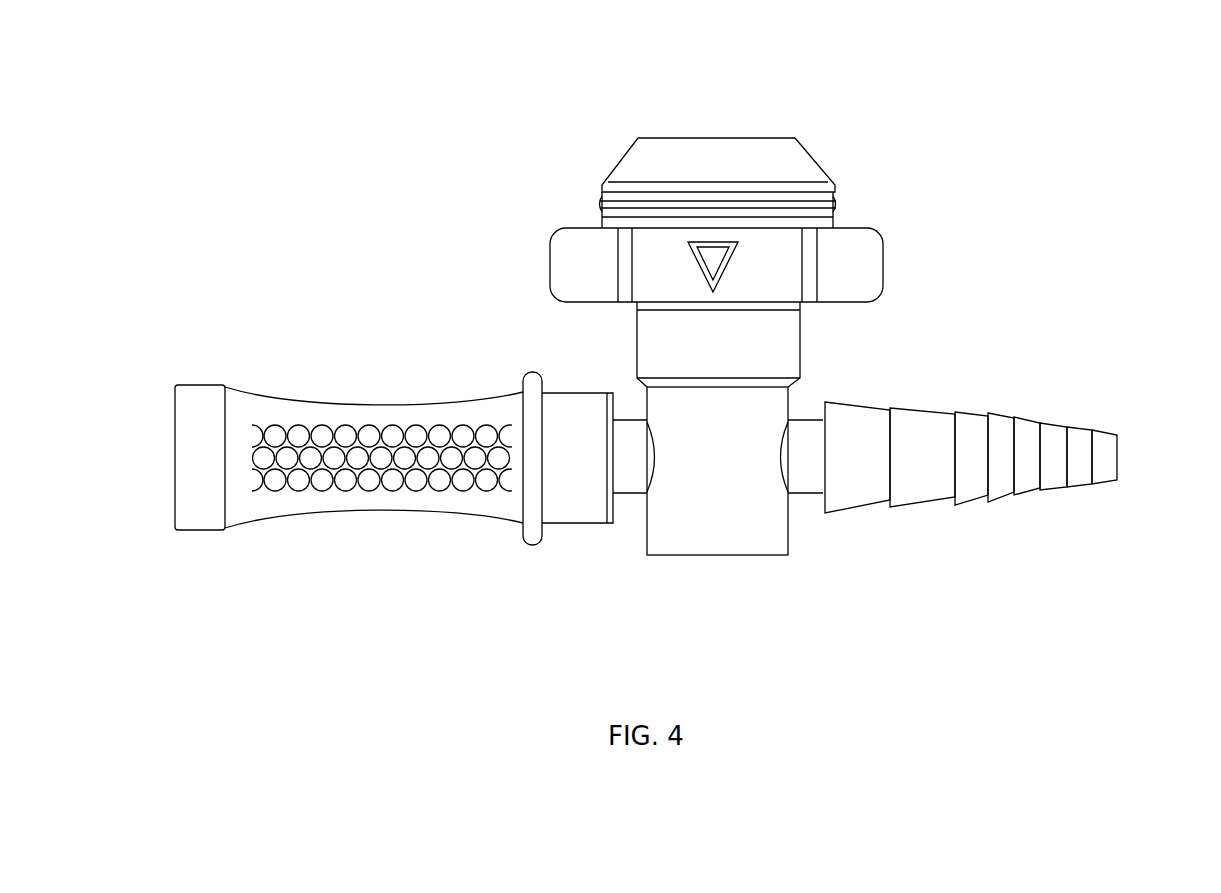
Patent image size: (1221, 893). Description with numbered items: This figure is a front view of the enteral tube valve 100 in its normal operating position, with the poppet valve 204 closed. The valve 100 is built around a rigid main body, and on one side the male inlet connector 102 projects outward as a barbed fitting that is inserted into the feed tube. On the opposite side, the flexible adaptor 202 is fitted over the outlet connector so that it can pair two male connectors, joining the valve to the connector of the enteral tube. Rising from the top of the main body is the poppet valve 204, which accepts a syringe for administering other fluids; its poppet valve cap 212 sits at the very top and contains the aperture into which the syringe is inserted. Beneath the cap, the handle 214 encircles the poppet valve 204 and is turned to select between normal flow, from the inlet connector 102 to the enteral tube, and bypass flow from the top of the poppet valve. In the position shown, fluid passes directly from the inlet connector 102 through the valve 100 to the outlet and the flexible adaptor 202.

The valve 100 is at (1060, 132).
The inlet connector 102 is at (1013, 493).
The flexible adaptor 202 is at (285, 397).
The poppet valve 204 is at (852, 133).
The poppet valve cap 212 is at (622, 160).
The handle 214 is at (882, 235).